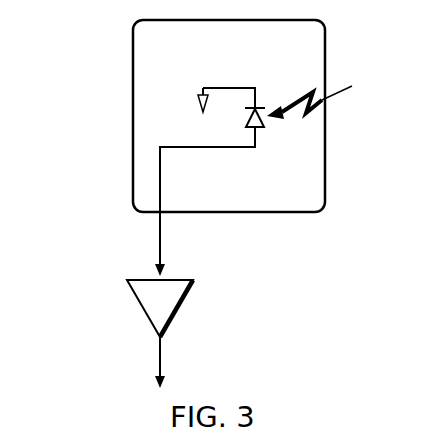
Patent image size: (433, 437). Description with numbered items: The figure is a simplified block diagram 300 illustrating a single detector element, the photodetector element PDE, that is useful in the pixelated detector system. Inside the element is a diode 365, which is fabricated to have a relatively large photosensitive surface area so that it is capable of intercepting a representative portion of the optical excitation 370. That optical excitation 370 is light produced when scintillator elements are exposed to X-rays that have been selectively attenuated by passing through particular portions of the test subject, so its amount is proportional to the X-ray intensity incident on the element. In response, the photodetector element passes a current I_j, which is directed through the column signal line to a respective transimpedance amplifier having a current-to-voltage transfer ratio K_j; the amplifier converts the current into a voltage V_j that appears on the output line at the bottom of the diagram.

The simplified block diagram 300 is at (408, 56).
The diode 365 is at (250, 132).
The optical excitation 370 is at (316, 108).